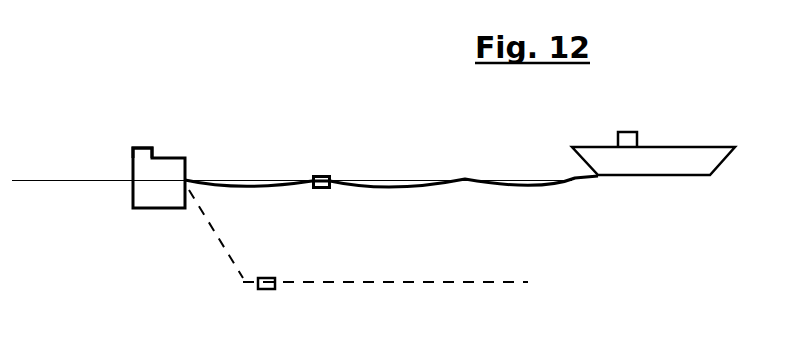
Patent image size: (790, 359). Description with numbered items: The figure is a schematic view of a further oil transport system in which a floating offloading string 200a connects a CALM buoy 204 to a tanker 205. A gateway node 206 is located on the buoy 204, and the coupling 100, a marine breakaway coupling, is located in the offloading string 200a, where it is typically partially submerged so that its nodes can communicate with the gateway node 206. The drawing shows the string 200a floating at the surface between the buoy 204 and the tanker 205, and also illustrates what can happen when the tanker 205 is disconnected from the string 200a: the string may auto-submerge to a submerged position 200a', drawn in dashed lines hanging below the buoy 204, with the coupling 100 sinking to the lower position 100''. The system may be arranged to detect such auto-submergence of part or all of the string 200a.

The CALM buoy 204 is at (133, 178).
The gateway node 206 is at (143, 148).
The coupling 100 is at (327, 150).
The offloading string 200a is at (391, 138).
The tanker 205 is at (648, 175).
The position of the MBC 100'' is at (263, 312).
The submerged position of the offloading string 200a' is at (358, 266).